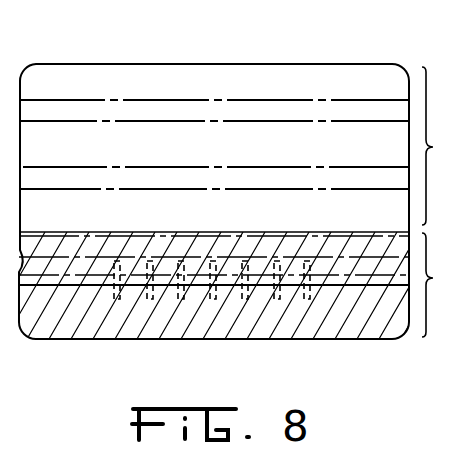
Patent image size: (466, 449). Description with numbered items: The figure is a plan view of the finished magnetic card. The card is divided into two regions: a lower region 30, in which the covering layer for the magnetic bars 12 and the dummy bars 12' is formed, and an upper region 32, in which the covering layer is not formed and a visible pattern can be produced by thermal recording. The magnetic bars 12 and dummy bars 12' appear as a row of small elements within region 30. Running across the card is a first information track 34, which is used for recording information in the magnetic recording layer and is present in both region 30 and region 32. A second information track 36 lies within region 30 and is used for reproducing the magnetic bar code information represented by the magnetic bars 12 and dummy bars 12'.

The magnetic bar 12 is at (212, 322).
The dummy bar 12' is at (213, 322).
The region where the covering layer is formed 30 is at (233, 285).
The region where the covering layer is not formed 32 is at (444, 146).
The first information track 34 is at (156, 240).
The second information track 36 is at (365, 277).